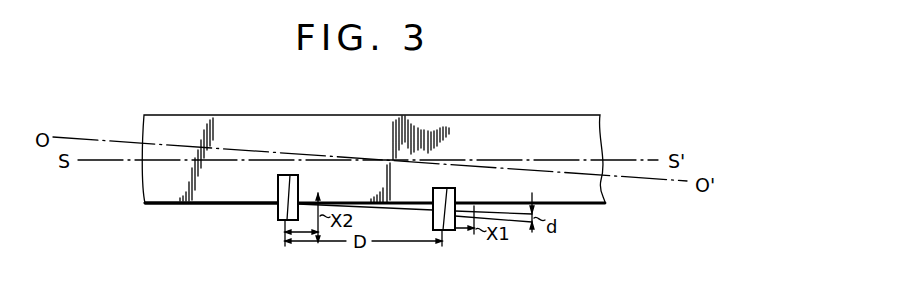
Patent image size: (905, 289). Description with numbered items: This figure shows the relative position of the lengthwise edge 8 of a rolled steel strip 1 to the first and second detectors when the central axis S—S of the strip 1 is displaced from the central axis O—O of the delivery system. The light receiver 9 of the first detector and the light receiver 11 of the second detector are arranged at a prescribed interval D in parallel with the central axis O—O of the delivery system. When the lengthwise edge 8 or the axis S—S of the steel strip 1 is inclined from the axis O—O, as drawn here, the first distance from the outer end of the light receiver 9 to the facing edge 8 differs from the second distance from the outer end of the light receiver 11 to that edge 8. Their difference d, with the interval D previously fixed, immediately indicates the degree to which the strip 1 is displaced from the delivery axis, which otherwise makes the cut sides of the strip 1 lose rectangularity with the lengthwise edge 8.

The rolled steel strip 1 is at (376, 124).
The lengthwise edge 8 is at (208, 204).
The light receiver 9 is at (443, 231).
The light receiver 11 is at (278, 218).